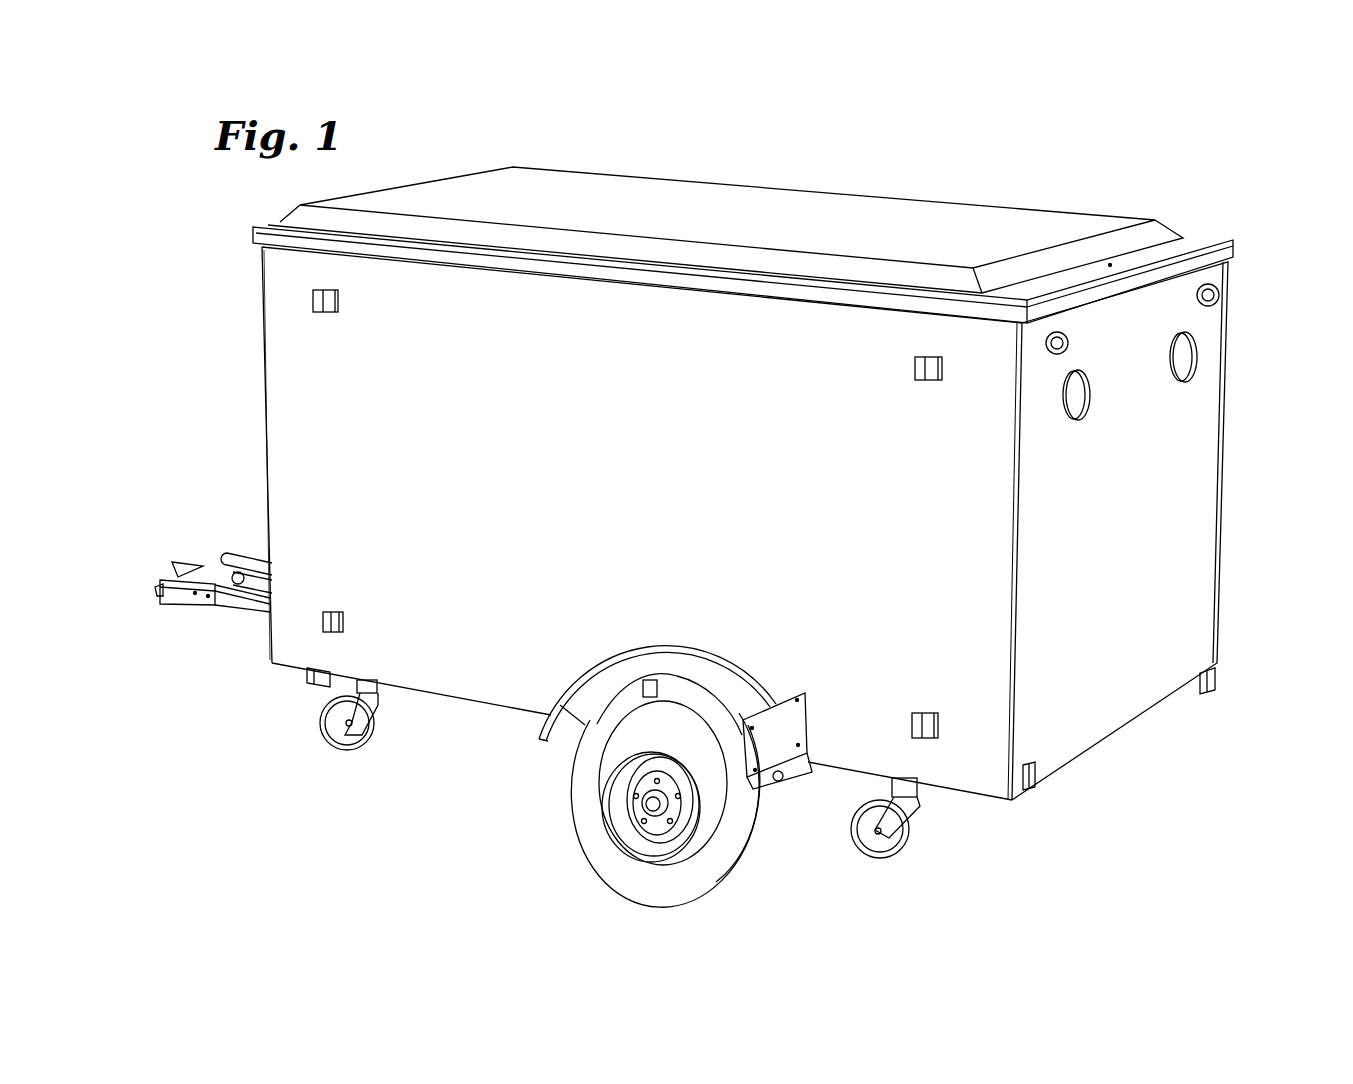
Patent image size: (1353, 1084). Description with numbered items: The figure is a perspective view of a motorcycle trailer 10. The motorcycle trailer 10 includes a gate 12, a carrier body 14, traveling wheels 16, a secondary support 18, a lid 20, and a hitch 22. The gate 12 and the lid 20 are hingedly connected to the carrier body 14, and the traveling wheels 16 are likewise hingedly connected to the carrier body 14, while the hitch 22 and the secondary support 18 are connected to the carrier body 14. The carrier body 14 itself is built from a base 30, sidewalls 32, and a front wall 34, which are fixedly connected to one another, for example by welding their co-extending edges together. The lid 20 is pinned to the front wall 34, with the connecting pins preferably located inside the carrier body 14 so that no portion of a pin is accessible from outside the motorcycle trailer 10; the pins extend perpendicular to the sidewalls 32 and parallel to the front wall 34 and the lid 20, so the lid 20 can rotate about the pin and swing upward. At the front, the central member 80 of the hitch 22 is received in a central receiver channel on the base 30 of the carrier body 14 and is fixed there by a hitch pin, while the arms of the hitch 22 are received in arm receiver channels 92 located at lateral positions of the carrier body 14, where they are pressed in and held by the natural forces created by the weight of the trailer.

The motorcycle trailer 10 is at (997, 137).
The gate 12 is at (1240, 535).
The carrier body 14 is at (1190, 222).
The traveling wheels 16 is at (592, 893).
The secondary support 18 is at (335, 735).
The lid 20 is at (745, 165).
The hitch 22 is at (167, 608).
The base 30 is at (480, 718).
The sidewalls 32 is at (500, 463).
The front wall 34 is at (228, 305).
The central member 80 is at (250, 615).
The arm receiver channels 92 is at (303, 682).